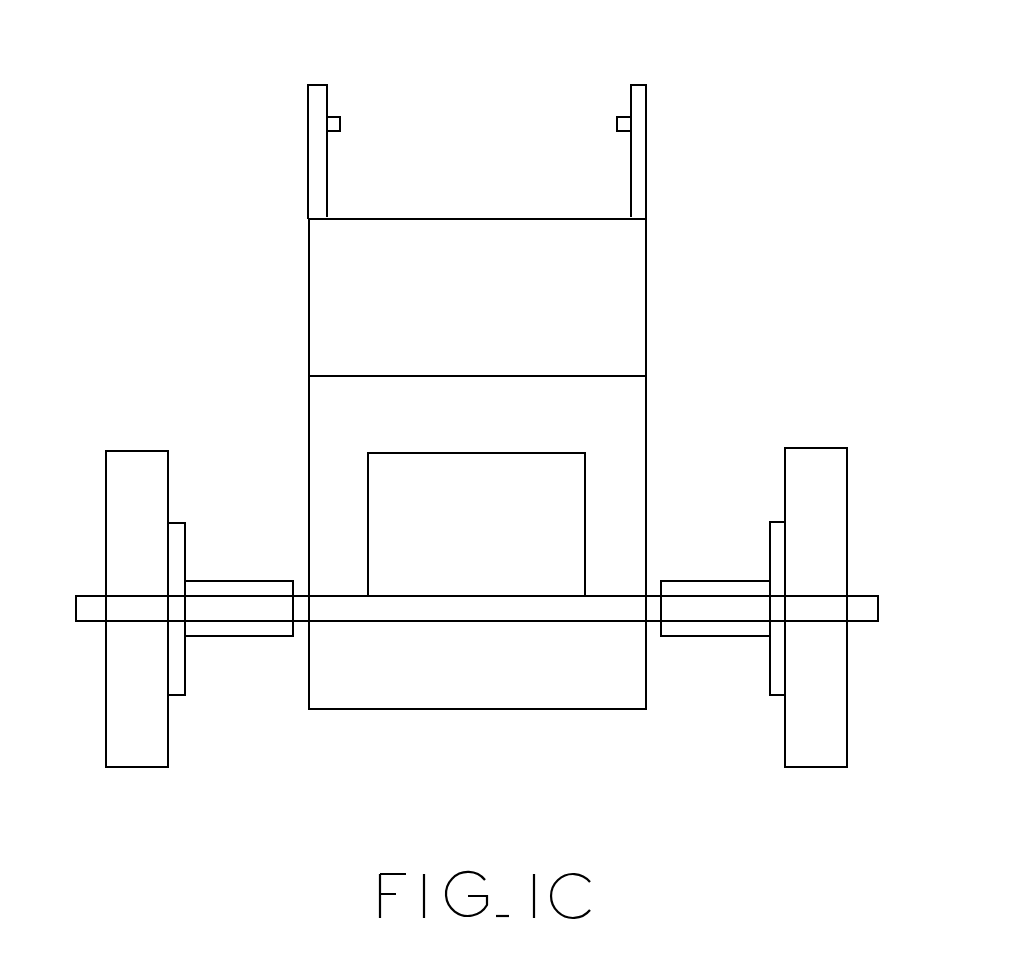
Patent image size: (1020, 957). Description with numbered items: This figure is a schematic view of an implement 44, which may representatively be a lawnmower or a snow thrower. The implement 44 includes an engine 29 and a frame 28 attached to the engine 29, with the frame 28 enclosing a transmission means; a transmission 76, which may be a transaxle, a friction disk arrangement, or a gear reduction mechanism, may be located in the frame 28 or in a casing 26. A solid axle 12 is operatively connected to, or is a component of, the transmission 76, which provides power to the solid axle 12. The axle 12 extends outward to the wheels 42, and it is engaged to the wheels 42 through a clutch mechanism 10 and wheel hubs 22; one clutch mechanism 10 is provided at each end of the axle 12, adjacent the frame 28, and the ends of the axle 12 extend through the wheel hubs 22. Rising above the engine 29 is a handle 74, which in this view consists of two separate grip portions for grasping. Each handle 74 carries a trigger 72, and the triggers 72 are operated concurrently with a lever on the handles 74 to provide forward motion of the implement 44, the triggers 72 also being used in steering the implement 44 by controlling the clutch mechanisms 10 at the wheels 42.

The implement 44 is at (765, 75).
The engine 29 is at (646, 302).
The frame 28 is at (697, 437).
The casing 26 is at (309, 428).
The transmission 76 is at (476, 500).
The handle 74 is at (308, 150).
The triggers 72 is at (340, 123).
The wheels 42 is at (106, 478).
The wheel hubs 22 is at (185, 548).
The clutch mechanism 10 is at (235, 648).
The solid axle 12 is at (76, 608).